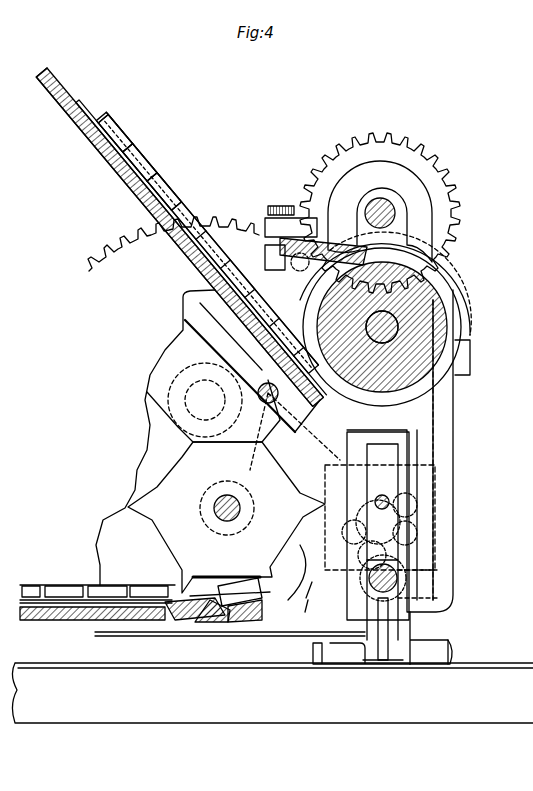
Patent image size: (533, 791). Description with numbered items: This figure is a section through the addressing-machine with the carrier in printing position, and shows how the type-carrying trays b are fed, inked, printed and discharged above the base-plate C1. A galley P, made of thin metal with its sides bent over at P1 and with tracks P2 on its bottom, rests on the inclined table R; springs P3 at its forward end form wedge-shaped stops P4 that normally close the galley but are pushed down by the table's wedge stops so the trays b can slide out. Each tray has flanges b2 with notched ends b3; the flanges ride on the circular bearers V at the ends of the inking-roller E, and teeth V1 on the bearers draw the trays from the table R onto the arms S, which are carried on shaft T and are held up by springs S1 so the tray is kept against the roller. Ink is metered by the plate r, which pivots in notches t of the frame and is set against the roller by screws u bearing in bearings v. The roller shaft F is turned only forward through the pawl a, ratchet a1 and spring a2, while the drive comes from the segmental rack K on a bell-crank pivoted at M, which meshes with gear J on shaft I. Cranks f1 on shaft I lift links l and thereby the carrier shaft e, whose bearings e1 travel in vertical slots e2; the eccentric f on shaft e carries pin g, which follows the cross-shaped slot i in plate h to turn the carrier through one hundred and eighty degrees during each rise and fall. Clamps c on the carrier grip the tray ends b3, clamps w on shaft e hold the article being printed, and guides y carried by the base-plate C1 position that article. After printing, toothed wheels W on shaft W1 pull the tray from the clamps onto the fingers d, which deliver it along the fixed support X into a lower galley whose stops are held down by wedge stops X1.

The galley P is at (207, 242).
The bent-over sides of galley P1 is at (201, 248).
The tracks P2 is at (179, 237).
The springs P3 is at (212, 238).
The wedge-shaped stops P4 is at (250, 347).
The inclined table R is at (179, 237).
The arms S is at (252, 378).
The springs S1 is at (255, 335).
The trays b is at (115, 133).
The flanges b2 is at (140, 162).
The concaved or notched ends of flanges b3 is at (164, 191).
The segmental rack K is at (118, 238).
The bearings v is at (266, 258).
The screws u is at (278, 216).
The notches t is at (298, 222).
The plate r is at (323, 251).
The gear J is at (417, 150).
The shaft I is at (395, 208).
The crank f1 is at (405, 232).
The teeth V1 is at (448, 392).
The shaft F is at (395, 322).
The inking-roller E is at (470, 372).
The circular bearers V is at (440, 618).
The links l is at (458, 468).
The clamps w is at (452, 646).
The vertical slots e2 is at (388, 452).
The plate h is at (325, 473).
The +-shaped slot i is at (362, 520).
The pin g is at (410, 550).
The shaft e is at (370, 585).
The eccentric or crank f is at (440, 580).
The bearings e1 is at (442, 598).
The clamps c is at (383, 662).
The guides y is at (312, 645).
The toothed wheels W is at (180, 460).
The shaft W1 is at (214, 506).
The pivot of bell-crank lever M is at (190, 393).
The shaft T is at (243, 425).
The galley-support X is at (240, 618).
The wedge-shaped stops X1 is at (210, 615).
The pawl a is at (145, 599).
The ratchet a1 is at (301, 597).
The spring a2 is at (275, 620).
The fingers d is at (297, 570).
The base C1 is at (272, 707).